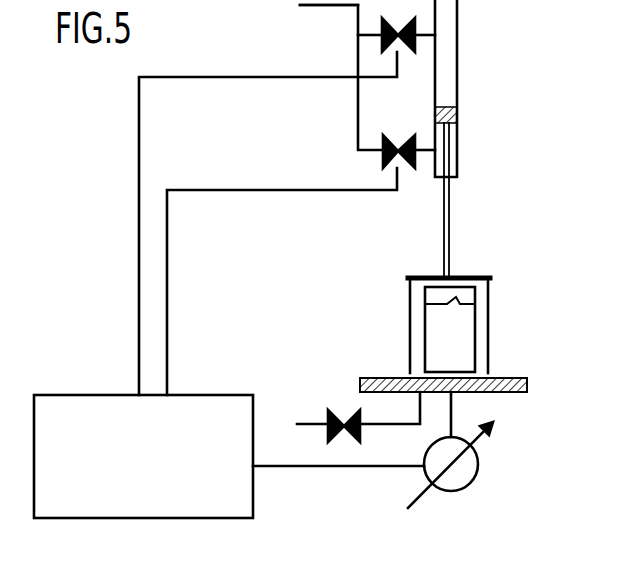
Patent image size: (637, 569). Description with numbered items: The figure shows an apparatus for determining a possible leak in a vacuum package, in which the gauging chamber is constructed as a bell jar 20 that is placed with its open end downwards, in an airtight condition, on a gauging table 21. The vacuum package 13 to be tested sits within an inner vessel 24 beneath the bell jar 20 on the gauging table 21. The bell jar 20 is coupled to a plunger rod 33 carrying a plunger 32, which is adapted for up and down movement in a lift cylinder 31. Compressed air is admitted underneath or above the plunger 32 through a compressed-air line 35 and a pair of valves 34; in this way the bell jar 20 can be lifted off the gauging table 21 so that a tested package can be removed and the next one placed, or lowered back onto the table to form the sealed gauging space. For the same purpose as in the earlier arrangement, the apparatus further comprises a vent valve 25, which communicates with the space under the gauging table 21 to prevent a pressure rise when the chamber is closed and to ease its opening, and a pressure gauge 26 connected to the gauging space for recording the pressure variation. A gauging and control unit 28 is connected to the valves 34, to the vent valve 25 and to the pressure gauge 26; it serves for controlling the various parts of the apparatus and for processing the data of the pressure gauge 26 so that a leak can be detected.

The vacuum package 13 is at (467, 358).
The bell jar 20 is at (489, 291).
The gauging table 21 is at (514, 388).
The cuvette 24 is at (481, 314).
The vent valve 25 is at (337, 414).
The pressure gauge 26 is at (470, 470).
The gauging and control unit 28 is at (168, 487).
The lift cylinder 31 is at (457, 60).
The plunger 32 is at (457, 115).
The plunger rod 33 is at (447, 210).
The valves 34 is at (407, 47).
The compressed-air line 35 is at (333, 6).